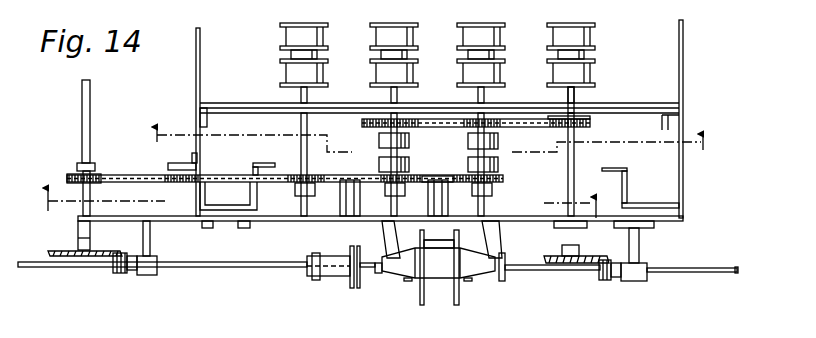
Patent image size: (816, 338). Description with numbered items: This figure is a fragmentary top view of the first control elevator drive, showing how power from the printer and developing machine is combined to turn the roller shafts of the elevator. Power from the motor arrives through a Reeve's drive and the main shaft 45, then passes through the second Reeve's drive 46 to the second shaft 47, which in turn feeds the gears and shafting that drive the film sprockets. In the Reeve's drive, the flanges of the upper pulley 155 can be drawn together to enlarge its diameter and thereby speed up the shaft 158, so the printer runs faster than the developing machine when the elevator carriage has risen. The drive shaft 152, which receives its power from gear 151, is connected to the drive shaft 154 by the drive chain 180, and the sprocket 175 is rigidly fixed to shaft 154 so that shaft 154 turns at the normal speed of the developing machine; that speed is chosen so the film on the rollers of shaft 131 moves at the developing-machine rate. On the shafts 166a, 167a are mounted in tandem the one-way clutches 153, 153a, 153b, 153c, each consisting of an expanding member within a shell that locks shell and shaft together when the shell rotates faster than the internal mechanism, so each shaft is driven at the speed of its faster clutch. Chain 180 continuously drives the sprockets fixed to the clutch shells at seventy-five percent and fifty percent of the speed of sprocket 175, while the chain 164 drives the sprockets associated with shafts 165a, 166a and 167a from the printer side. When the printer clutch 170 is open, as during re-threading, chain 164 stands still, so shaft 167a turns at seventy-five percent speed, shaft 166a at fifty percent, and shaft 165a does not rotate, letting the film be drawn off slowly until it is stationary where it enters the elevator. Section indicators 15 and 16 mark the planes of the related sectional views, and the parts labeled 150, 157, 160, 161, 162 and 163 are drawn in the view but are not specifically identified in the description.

The section line 15- 15 is at (428, 139).
The section line 16- 16 is at (324, 203).
The main shaft 45 is at (716, 265).
The second Reeve's drive 46 is at (478, 274).
The second shaft 47 is at (214, 268).
The shaft 131 is at (578, 100).
The knurled hub 150 is at (604, 282).
The gear 151 is at (546, 258).
The drive shaft 152 is at (560, 247).
The one-way clutch 153 is at (379, 140).
The one-way clutch 153a is at (379, 164).
The one-way clutch 153b is at (498, 140).
The one-way clutch 153c is at (498, 165).
The drive shaft 154 is at (580, 92).
The upper pulley 155 is at (458, 300).
The roller core 157 is at (438, 292).
The shaft 158 is at (356, 289).
The knurled hub 160 is at (118, 274).
The gear disc 161 is at (62, 258).
The post 162 is at (82, 134).
The sprocket 163 is at (94, 182).
The chain 164 is at (230, 173).
The shaft 165a is at (301, 123).
The shaft 166a is at (397, 100).
The shaft 167a is at (484, 100).
The printer clutch 170 is at (345, 277).
The sprocket 175 is at (585, 128).
The drive chain 180 is at (590, 121).